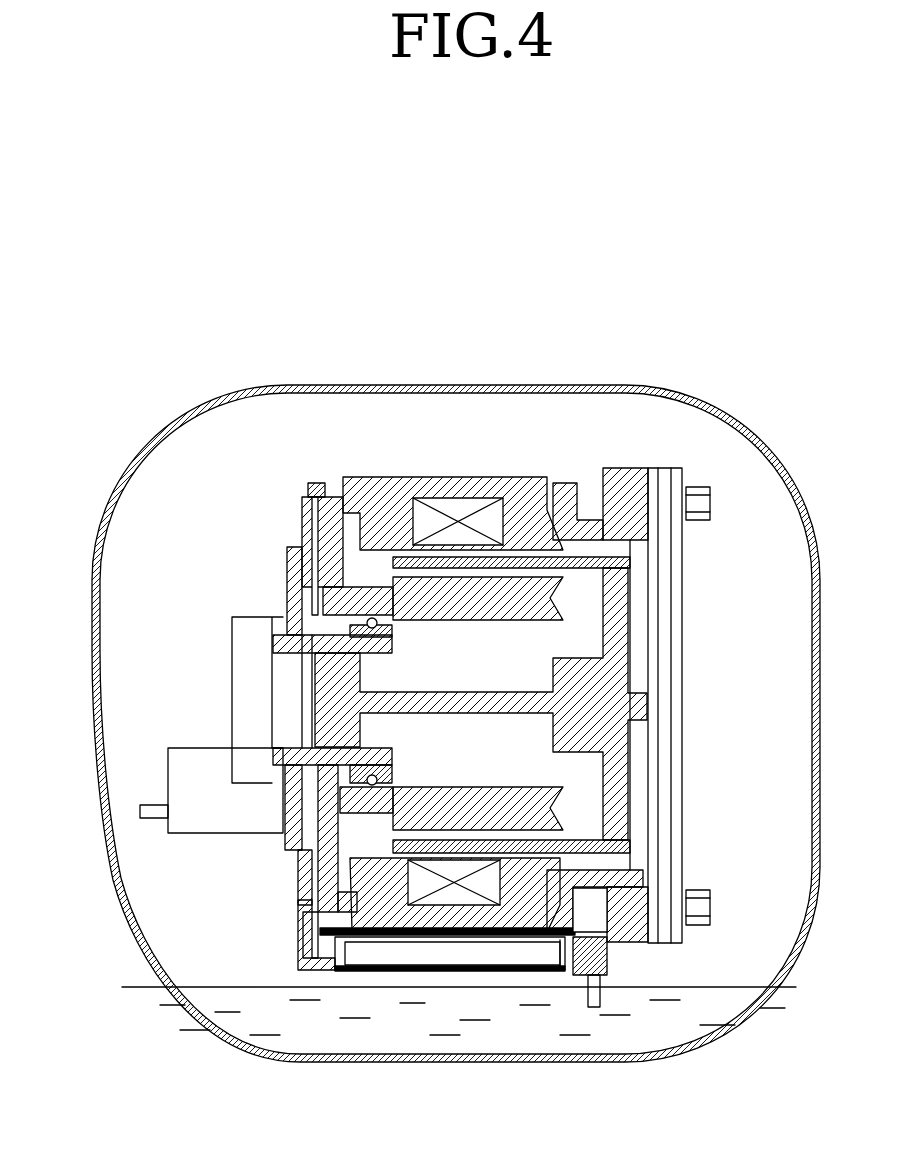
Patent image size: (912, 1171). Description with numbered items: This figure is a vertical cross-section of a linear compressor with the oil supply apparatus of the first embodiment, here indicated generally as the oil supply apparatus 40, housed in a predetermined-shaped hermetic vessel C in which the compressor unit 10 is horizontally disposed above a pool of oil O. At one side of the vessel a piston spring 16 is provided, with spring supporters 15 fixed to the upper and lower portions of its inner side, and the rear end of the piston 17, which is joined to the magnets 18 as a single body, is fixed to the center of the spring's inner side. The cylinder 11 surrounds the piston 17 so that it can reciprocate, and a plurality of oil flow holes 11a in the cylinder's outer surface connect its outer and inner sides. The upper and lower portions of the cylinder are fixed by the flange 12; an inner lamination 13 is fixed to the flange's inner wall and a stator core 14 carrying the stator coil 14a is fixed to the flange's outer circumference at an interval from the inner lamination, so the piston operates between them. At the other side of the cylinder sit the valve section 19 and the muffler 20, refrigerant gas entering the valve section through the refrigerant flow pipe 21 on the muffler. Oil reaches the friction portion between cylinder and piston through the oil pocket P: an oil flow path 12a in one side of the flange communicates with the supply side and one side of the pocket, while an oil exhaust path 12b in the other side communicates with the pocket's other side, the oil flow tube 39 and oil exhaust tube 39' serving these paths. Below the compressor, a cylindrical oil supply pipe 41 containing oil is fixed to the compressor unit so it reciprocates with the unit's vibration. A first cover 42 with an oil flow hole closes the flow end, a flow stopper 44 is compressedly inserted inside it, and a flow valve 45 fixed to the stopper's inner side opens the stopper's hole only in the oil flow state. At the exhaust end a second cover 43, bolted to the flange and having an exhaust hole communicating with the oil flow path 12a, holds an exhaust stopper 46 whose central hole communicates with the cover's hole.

The hermetic vessel C is at (225, 385).
The oil O is at (718, 1013).
The compressor unit 10 is at (268, 592).
The oil pocket P is at (320, 632).
The cylinder 11 is at (340, 641).
The oil flow holes 11a is at (360, 645).
The flange 12 is at (296, 858).
The oil flow path 12a is at (297, 948).
The oil exhaust path 12b is at (308, 527).
The inner lamination 13 is at (436, 798).
The stator core 14 is at (385, 476).
The stator coil 14a is at (455, 520).
The spring supporters 15 is at (630, 475).
The piston spring 16 is at (677, 628).
The piston 17 is at (487, 707).
The magnets 18 is at (500, 846).
The valve section 19 is at (240, 715).
The muffler 20 is at (195, 820).
The refrigerant flow pipe 21 is at (150, 810).
The oil flow tube 39 is at (624, 1046).
The oil exhaust tube 39' is at (305, 412).
The oil pump frame 40 is at (441, 978).
The oil supply pipe 41 is at (405, 975).
The first cover 42 is at (607, 955).
The second cover 43 is at (305, 955).
The flow stopper 44 is at (583, 987).
The flow valve 45 is at (560, 975).
The exhaust stopper 46 is at (345, 975).